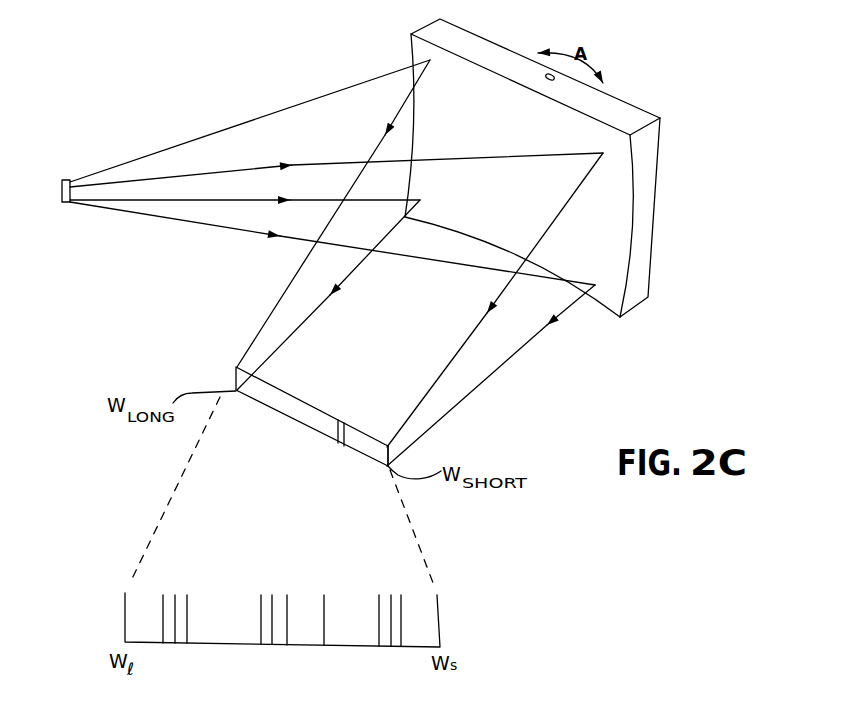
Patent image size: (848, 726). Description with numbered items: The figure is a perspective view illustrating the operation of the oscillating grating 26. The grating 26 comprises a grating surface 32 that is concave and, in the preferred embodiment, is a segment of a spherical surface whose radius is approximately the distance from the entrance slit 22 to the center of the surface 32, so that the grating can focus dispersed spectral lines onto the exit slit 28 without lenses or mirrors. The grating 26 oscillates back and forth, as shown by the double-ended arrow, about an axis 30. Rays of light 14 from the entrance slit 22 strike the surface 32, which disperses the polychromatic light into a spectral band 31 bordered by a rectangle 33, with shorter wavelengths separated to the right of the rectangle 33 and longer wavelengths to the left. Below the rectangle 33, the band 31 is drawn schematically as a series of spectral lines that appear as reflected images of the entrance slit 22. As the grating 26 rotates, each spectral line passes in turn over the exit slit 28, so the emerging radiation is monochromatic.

The light rays 14 is at (213, 133).
The entrance slit 22 is at (65, 203).
The oscillating grating 26 is at (614, 77).
The exit slit 28 is at (338, 446).
The axis 30 is at (549, 82).
The spectral band 31 is at (284, 647).
The grating surface 32 is at (533, 147).
The rectangle 33 is at (386, 468).